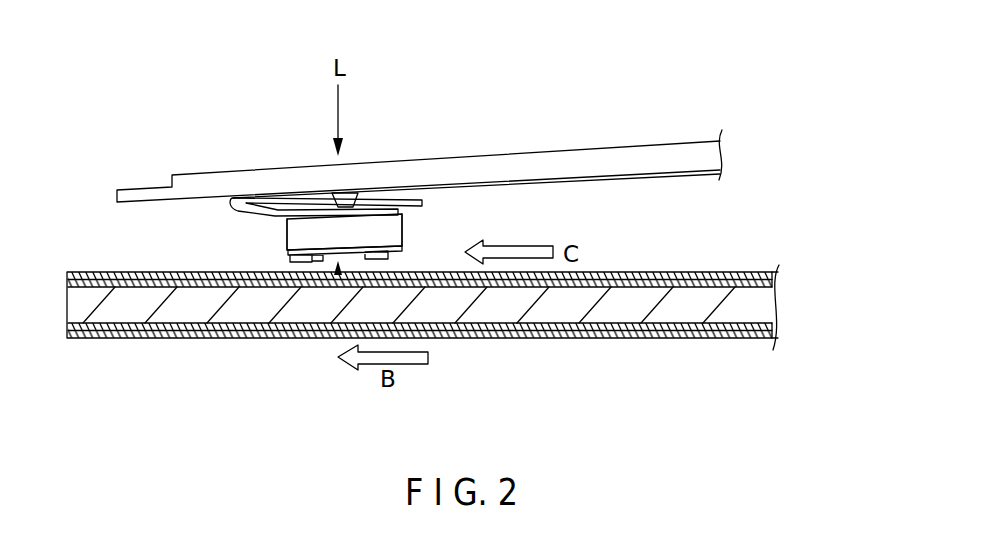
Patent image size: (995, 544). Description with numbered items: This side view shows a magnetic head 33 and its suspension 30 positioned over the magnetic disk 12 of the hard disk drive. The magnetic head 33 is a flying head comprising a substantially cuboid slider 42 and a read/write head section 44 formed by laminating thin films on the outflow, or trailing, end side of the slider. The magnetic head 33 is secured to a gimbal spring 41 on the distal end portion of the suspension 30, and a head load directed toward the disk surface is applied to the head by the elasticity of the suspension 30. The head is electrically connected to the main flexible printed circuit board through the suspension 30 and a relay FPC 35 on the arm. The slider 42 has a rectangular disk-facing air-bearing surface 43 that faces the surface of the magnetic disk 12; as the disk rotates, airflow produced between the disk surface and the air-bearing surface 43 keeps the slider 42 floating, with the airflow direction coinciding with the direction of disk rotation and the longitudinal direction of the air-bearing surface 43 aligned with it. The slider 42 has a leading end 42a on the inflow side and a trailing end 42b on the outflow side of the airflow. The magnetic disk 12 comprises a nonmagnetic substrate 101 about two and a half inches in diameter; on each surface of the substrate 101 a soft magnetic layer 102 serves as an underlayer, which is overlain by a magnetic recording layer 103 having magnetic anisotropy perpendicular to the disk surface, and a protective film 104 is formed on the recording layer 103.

The magnetic disk 12 is at (738, 259).
The suspension 30 is at (597, 160).
The magnetic head 33 is at (410, 237).
The relay FPC 35 is at (665, 177).
The gimbal spring 41 is at (405, 200).
The slider 42 is at (318, 226).
The leading end 42a is at (405, 222).
The trailing end 42b is at (290, 251).
The air-bearing surface 43 is at (338, 275).
The head section 44 is at (296, 235).
The substrate 101 is at (677, 312).
The soft magnetic layer 102 is at (771, 291).
The magnetic recording layer 103 is at (702, 277).
The protective film 104 is at (772, 270).